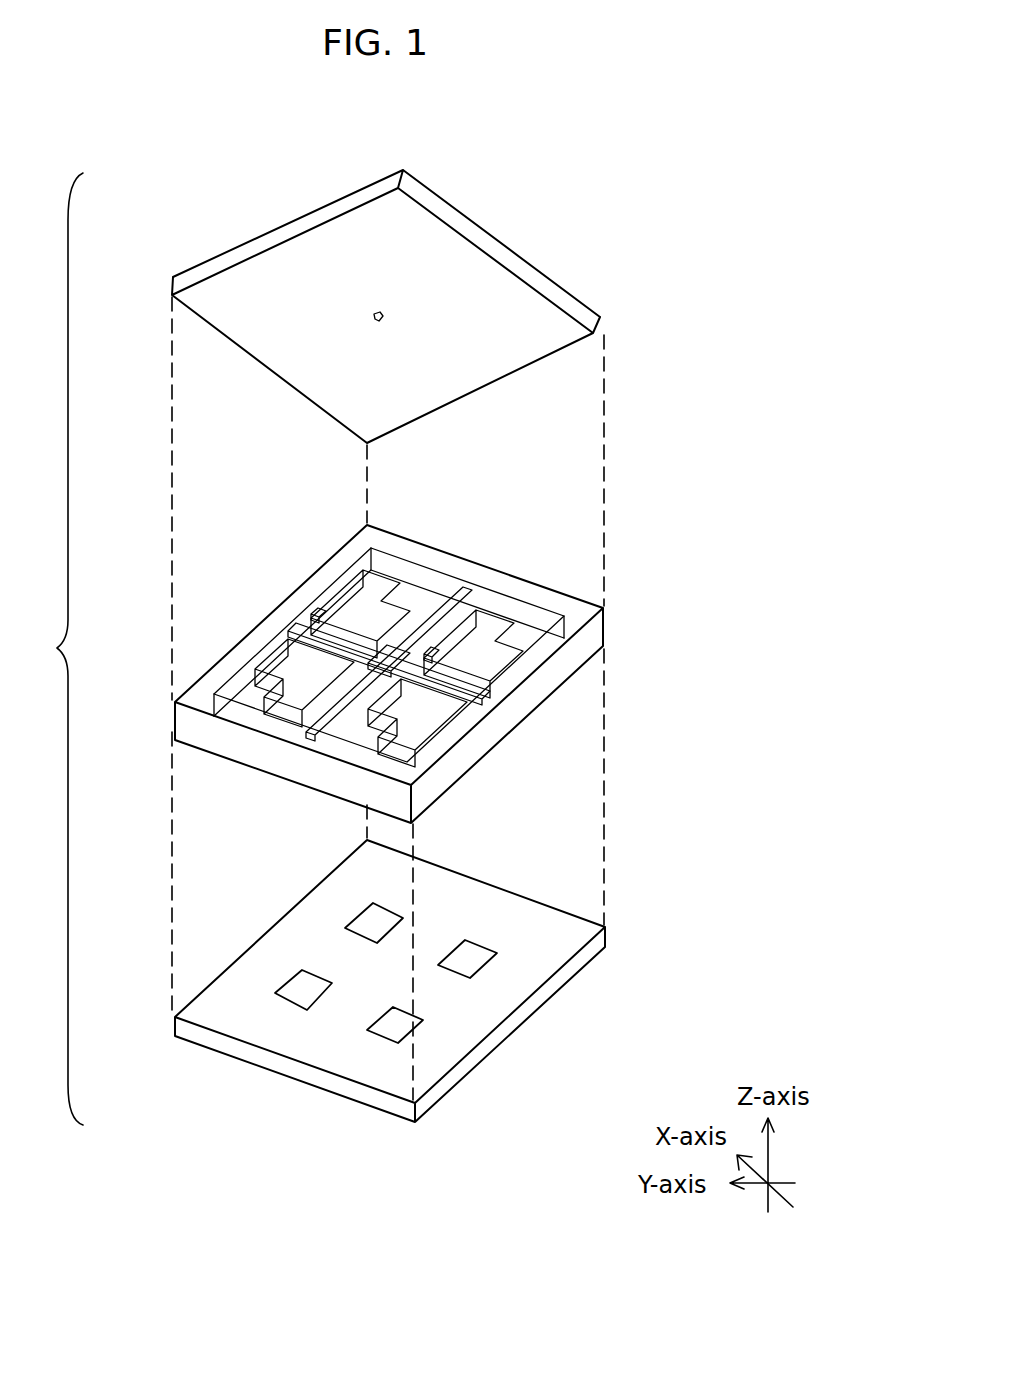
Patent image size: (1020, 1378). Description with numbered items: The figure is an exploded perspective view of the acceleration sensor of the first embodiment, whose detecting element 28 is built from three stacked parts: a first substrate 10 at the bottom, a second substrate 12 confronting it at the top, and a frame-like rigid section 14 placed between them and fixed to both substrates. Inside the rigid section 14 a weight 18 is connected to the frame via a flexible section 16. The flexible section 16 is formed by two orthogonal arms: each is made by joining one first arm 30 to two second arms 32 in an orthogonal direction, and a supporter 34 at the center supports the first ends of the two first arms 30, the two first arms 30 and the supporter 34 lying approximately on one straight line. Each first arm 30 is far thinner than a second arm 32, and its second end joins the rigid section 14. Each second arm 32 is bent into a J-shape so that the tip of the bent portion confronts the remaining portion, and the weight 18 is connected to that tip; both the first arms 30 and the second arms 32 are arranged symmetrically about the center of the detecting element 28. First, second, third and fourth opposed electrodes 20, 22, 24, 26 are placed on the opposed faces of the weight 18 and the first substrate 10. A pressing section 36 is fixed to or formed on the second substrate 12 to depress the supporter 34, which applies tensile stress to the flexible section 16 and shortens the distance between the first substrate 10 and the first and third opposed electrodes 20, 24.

The first substrate 10 is at (478, 1035).
The second substrate 12 is at (510, 262).
The rigid section 14 is at (470, 565).
The flexible section 16 is at (318, 610).
The weight 18 is at (365, 595).
The first opposed electrode 20 is at (293, 993).
The second opposed electrode 22 is at (387, 1030).
The third opposed electrode 24 is at (370, 918).
The fourth opposed electrode 26 is at (480, 958).
The detecting element 28 is at (50, 649).
The first arm 30 is at (287, 617).
The second arm 32 is at (462, 600).
The supporter 34 is at (372, 660).
The pressing section 36 is at (377, 313).